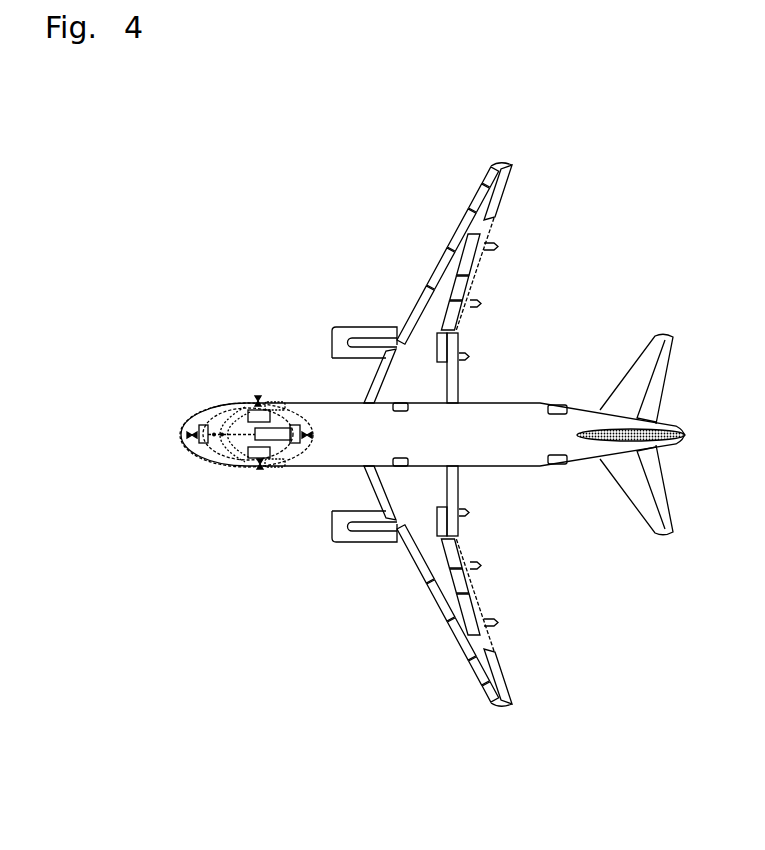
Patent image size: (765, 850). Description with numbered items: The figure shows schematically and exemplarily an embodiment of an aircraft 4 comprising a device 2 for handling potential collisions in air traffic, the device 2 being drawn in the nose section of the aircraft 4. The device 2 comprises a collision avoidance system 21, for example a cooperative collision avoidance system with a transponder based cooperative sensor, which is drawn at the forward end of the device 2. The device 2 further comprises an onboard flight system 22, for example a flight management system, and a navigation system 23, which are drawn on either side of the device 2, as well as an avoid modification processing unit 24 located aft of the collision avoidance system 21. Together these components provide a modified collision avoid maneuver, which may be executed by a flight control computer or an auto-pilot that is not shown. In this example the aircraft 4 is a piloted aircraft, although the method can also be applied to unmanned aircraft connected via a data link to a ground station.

The aircraft 4 is at (197, 194).
The device for handling potential collisions in air traffic 2 is at (197, 408).
The collision avoidance system 21 is at (191, 436).
The onboard flight system 22 is at (260, 468).
The navigation system 23 is at (258, 398).
The avoid modification processing unit 24 is at (311, 436).